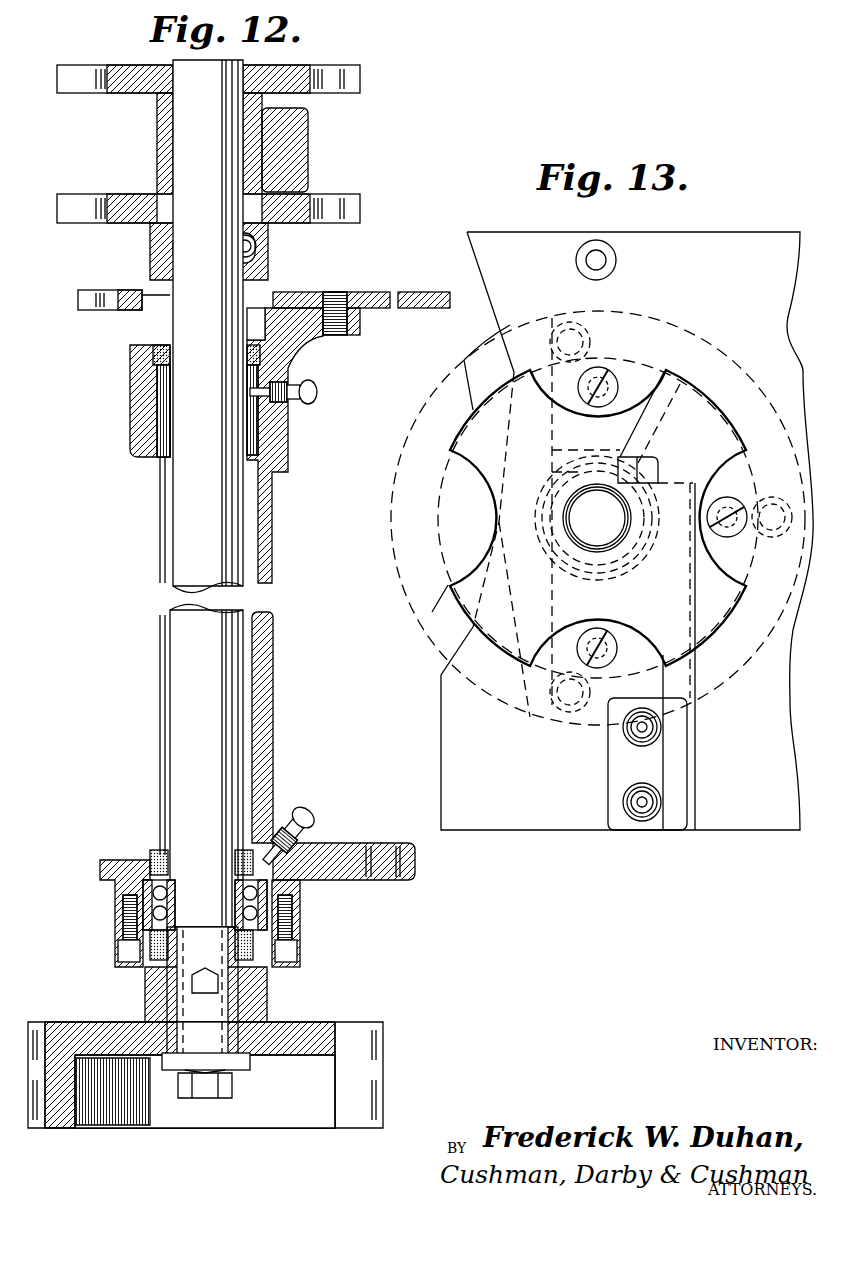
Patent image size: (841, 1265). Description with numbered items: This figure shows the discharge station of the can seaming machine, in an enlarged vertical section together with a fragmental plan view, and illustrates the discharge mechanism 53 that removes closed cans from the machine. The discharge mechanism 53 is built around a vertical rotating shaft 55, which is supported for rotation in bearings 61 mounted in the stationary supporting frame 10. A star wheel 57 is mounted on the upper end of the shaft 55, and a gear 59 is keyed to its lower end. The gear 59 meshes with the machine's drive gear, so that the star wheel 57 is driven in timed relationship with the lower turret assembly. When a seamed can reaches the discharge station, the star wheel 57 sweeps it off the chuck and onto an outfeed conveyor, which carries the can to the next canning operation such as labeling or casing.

In FIG. 12, the stationary supporting frame 10 is at (284, 731).
In FIG. 13, the stationary supporting frame 10 is at (545, 840).
In FIG. 12, the discharge mechanism 53 is at (126, 394).
In FIG. 12, the rotating shaft 55 is at (172, 534).
In FIG. 13, the rotating shaft 55 is at (526, 528).
In FIG. 12, the star wheel 57 is at (362, 79).
In FIG. 13, the star wheel 57 is at (456, 590).
In FIG. 12, the gear 59 is at (362, 1022).
In FIG. 12, the bearings 61 is at (306, 850).